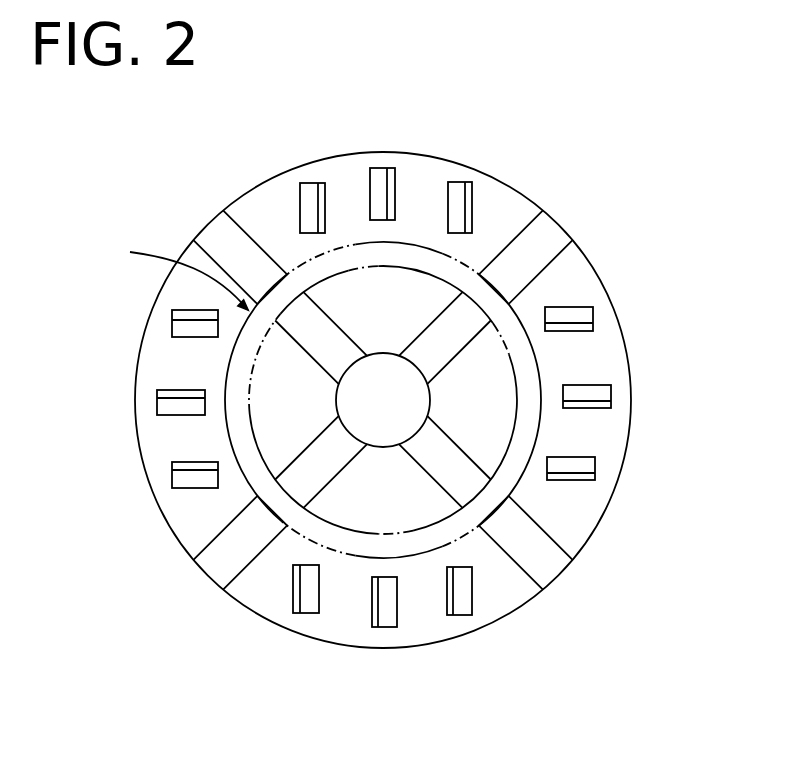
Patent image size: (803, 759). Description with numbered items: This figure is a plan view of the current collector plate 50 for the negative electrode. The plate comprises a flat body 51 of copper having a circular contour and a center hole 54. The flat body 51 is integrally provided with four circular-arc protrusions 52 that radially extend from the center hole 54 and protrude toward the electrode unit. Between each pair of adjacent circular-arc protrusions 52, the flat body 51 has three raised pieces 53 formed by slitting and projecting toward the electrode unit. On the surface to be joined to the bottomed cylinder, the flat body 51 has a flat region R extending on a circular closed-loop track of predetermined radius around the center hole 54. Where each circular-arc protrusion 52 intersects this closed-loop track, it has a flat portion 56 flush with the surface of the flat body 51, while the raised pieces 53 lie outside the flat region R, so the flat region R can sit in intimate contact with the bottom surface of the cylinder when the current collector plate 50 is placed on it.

The current collector plate 50 is at (477, 167).
The flat body 51 is at (291, 200).
The circular-arc protrusion 52 is at (213, 238).
The raised piece 53 is at (397, 190).
The center hole 54 is at (420, 404).
The flat portion 56 is at (295, 268).
The flat region R is at (176, 269).